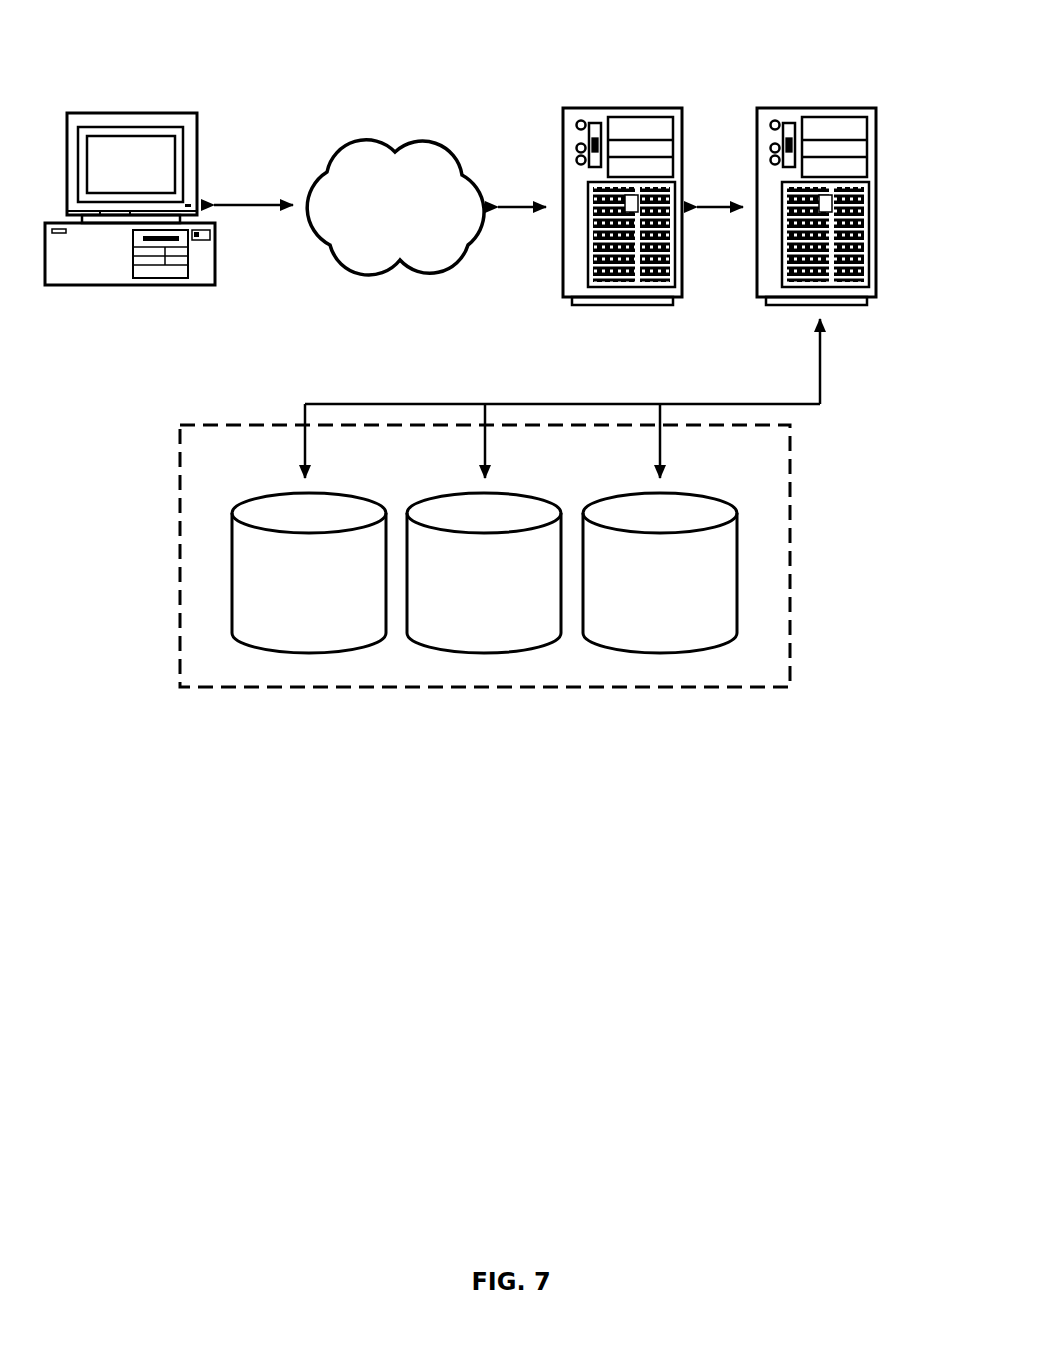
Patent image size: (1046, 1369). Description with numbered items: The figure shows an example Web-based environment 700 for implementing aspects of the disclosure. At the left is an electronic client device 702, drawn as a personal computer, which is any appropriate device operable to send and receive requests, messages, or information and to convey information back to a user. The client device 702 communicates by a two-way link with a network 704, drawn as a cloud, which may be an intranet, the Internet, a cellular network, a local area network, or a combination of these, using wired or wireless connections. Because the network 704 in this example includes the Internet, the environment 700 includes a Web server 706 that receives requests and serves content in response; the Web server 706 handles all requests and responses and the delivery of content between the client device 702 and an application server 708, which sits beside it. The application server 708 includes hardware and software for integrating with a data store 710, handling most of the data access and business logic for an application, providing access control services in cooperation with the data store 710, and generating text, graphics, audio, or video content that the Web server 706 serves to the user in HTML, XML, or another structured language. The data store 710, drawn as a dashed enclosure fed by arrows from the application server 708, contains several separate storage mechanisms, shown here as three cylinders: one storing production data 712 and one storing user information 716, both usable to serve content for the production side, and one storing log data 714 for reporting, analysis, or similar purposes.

The environment 700 is at (946, 408).
The electronic client device 702 is at (157, 113).
The network 704 is at (417, 140).
The Web server 706 is at (563, 273).
The application server 708 is at (755, 285).
The data store 710 is at (217, 687).
The production data 712 is at (330, 650).
The log data 714 is at (483, 650).
The user information 716 is at (680, 650).